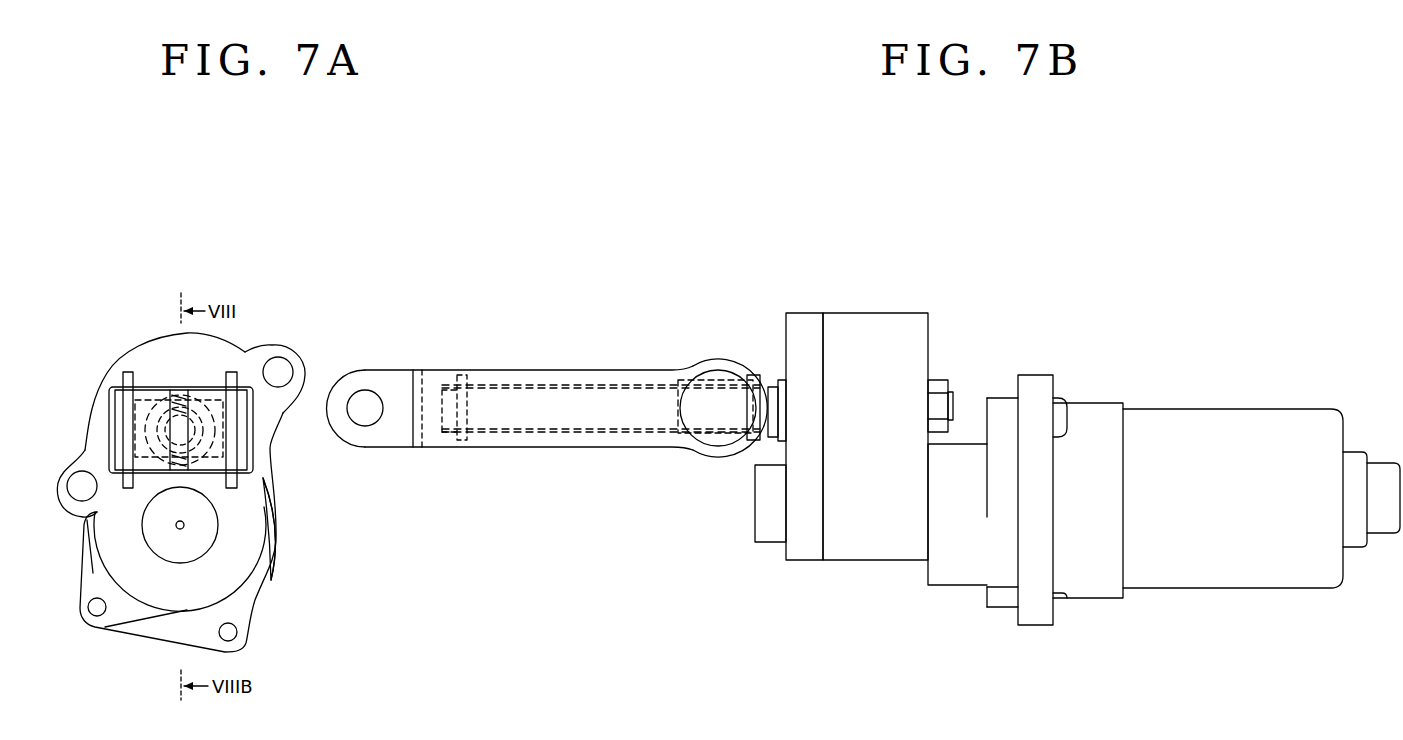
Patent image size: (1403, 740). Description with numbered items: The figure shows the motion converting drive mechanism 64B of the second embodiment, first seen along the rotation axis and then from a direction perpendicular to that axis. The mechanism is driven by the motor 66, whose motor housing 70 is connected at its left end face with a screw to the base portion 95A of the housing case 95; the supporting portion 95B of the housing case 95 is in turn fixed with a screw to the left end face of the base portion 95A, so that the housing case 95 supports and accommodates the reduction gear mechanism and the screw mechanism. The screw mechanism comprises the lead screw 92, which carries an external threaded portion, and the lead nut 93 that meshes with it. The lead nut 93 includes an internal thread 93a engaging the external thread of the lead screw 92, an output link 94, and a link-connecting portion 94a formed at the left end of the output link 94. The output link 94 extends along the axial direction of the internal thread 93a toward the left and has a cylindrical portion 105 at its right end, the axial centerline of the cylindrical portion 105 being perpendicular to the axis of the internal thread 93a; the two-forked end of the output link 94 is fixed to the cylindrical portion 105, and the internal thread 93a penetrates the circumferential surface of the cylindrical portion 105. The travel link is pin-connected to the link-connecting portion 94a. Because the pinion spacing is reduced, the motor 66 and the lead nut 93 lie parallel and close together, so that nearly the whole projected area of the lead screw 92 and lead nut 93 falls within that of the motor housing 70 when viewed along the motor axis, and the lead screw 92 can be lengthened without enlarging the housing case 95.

In FIG. 7B, the motion converting drive mechanism 64B is at (1016, 278).
In FIG. 7A, the motor 66 is at (280, 517).
In FIG. 7B, the motor 66 is at (1164, 479).
In FIG. 7B, the motor housing 70 is at (1247, 420).
In FIG. 7A, the lead screw 92 is at (150, 432).
In FIG. 7B, the lead screw 92 is at (565, 392).
In FIG. 7A, the lead nut 93 is at (212, 378).
In FIG. 7B, the lead nut 93 is at (697, 349).
In FIG. 7B, the internal thread 93a is at (708, 380).
In FIG. 7A, the output link 94 is at (237, 380).
In FIG. 7B, the output link 94 is at (495, 372).
In FIG. 7A, the link-connecting portion 94a is at (173, 397).
In FIG. 7B, the link-connecting portion 94a is at (385, 377).
In FIG. 7A, the housing case 95 is at (181, 492).
In FIG. 7B, the housing case 95 is at (841, 474).
In FIG. 7A, the base portion 95A is at (238, 557).
In FIG. 7B, the base portion 95A is at (875, 458).
In FIG. 7A, the supporting portion 95B is at (224, 525).
In FIG. 7B, the supporting portion 95B is at (802, 548).
In FIG. 7A, the cylindrical portion 105 is at (112, 395).
In FIG. 7B, the cylindrical portion 105 is at (695, 377).